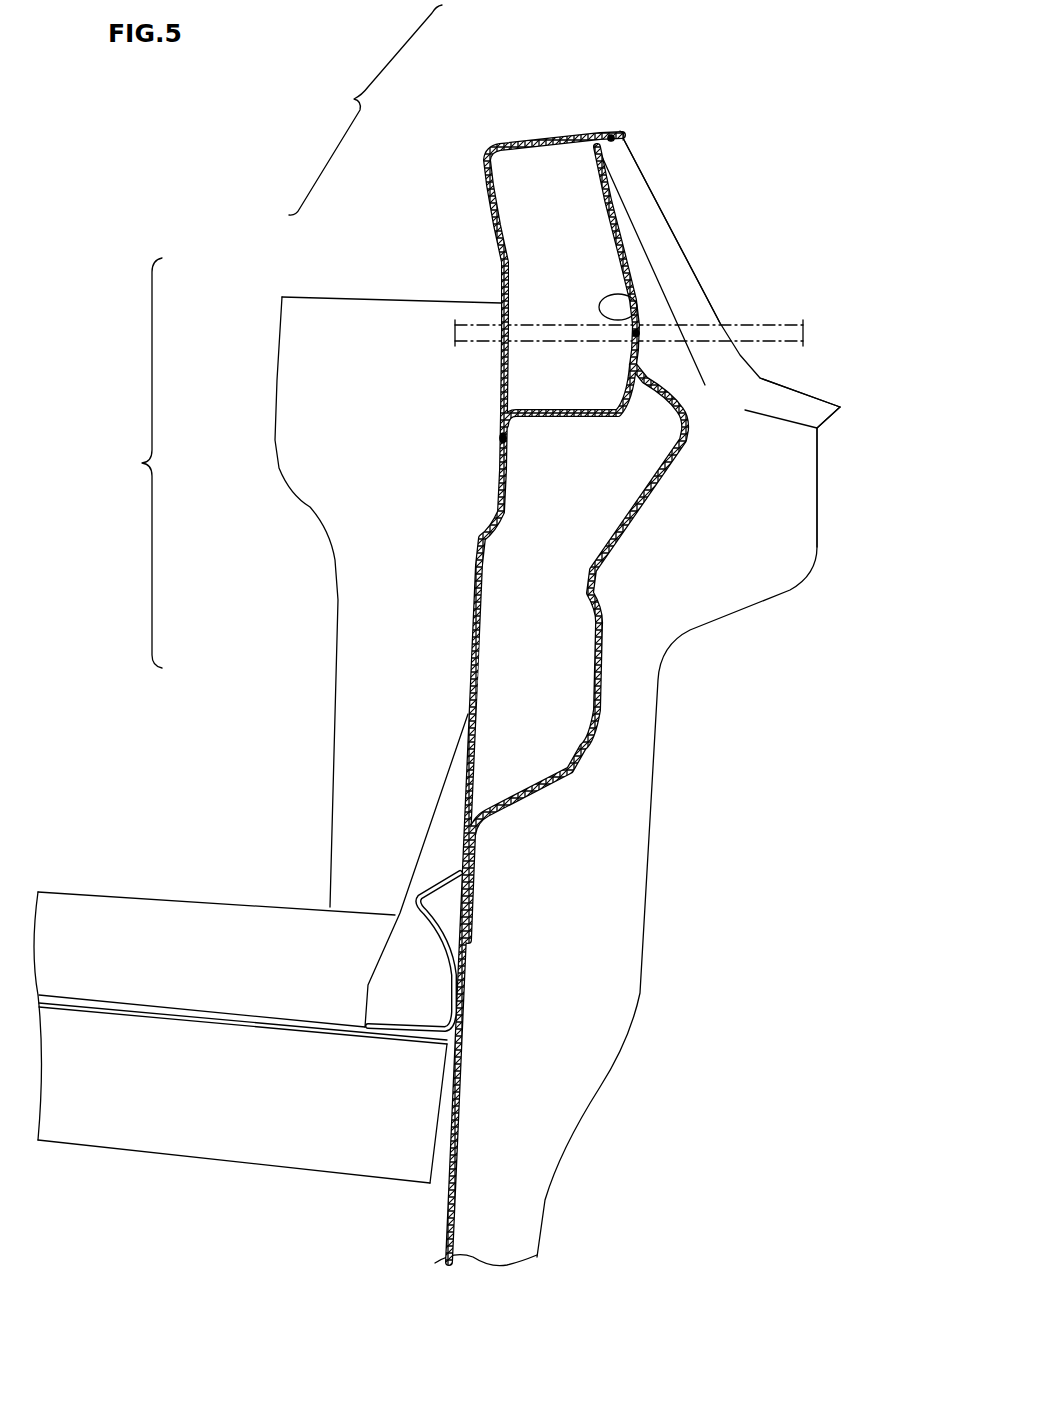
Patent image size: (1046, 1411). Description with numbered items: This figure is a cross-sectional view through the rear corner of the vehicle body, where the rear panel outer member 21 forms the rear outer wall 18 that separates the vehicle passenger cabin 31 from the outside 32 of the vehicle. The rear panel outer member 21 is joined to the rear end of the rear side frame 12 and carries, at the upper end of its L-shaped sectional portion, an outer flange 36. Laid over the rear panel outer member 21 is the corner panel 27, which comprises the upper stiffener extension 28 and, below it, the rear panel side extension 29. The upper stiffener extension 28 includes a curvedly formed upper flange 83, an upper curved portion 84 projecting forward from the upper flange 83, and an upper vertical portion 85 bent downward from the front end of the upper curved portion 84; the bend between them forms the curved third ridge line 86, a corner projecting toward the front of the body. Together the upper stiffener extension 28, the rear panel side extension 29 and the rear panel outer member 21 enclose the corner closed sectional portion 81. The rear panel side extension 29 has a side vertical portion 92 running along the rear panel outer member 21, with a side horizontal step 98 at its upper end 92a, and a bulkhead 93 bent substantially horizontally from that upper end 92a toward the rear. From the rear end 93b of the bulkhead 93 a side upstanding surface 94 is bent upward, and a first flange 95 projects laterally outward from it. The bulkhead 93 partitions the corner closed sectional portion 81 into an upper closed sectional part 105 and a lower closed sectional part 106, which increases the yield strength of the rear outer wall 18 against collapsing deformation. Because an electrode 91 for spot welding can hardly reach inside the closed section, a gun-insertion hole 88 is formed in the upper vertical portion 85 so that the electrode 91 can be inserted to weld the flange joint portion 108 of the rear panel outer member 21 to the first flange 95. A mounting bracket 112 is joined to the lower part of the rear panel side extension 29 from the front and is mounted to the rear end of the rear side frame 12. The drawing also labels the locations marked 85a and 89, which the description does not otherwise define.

The rear side frame 12 is at (85, 920).
The rear outer wall 18 is at (658, 168).
The rear panel outer member 21 is at (694, 437).
The corner panel 27 is at (133, 463).
The upper stiffener extension 28 is at (498, 281).
The rear panel side extension 29 is at (470, 669).
The vehicle passenger cabin 31 is at (86, 622).
The outside 32 is at (831, 677).
The outer flange 36 is at (627, 150).
The corner closed sectional portion 81 is at (617, 224).
The upper flange 83 is at (610, 132).
The upper curved portion 84 is at (538, 138).
The upper vertical portion 85 is at (504, 252).
The bolt 85a is at (500, 437).
The third ridge line 86 is at (484, 156).
The gun-insertion hole 88 is at (503, 362).
The pillar upper outer panel 89 is at (365, 110).
The electrode 91 is at (463, 322).
The side vertical portion 92 is at (477, 625).
The upper end of side vertical portion 92a is at (508, 457).
The bulkhead 93 is at (568, 400).
The rear end of bulkhead 93b is at (609, 402).
The side upstanding surface 94 is at (688, 388).
The first flange 95 is at (605, 305).
The side horizontal step 98 is at (488, 521).
The upper closed sectional part 105 is at (563, 270).
The lower closed sectional part 106 is at (533, 662).
The flange joint portion 108 is at (640, 356).
The mounting bracket 112 is at (436, 850).